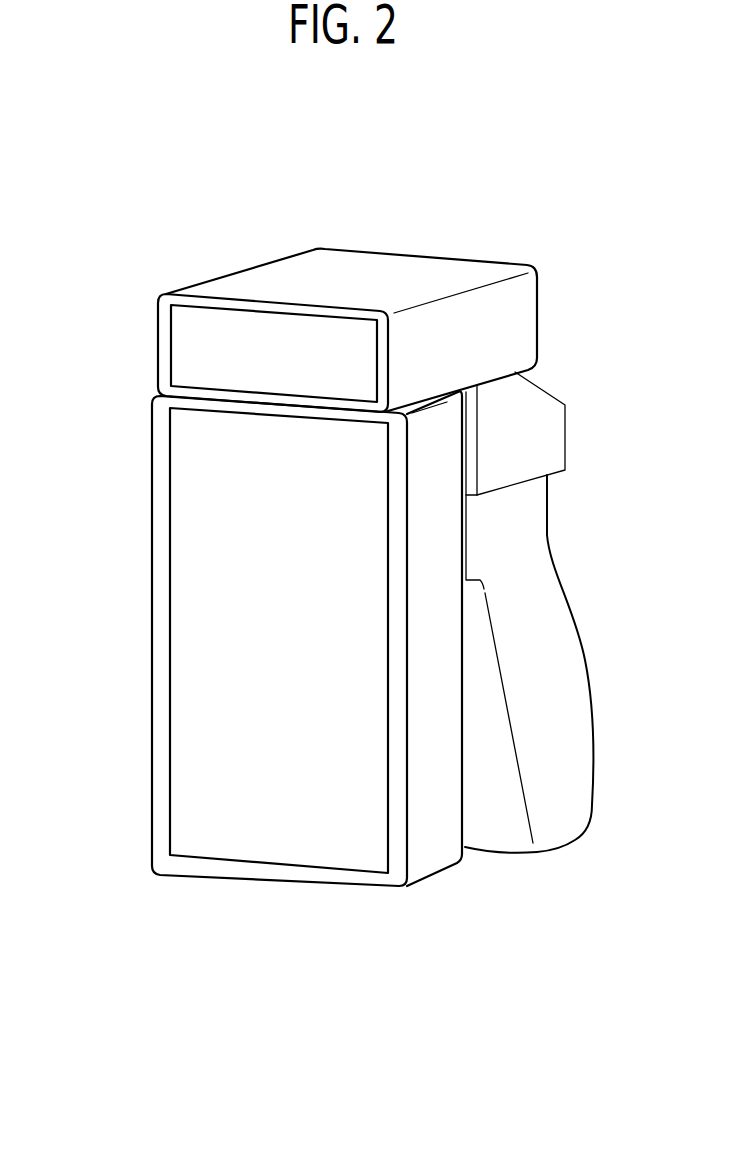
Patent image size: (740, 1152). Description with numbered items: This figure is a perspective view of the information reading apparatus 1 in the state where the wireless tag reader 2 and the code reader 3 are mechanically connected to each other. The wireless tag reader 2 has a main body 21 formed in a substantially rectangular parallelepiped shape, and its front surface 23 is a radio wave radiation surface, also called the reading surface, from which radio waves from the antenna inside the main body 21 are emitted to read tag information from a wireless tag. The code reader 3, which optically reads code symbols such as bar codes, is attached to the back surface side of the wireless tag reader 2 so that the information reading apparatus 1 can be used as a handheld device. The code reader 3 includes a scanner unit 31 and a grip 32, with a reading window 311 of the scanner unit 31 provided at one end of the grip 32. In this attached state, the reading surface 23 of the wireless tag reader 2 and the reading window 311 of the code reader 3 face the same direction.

The information reading apparatus 1 is at (470, 175).
The wireless tag reader 2 is at (118, 571).
The main body 21 is at (310, 884).
The front surface 23 is at (202, 717).
The code reader 3 is at (572, 290).
The scanner unit 31 is at (287, 275).
The reading window 311 is at (192, 353).
The grip 32 is at (573, 643).